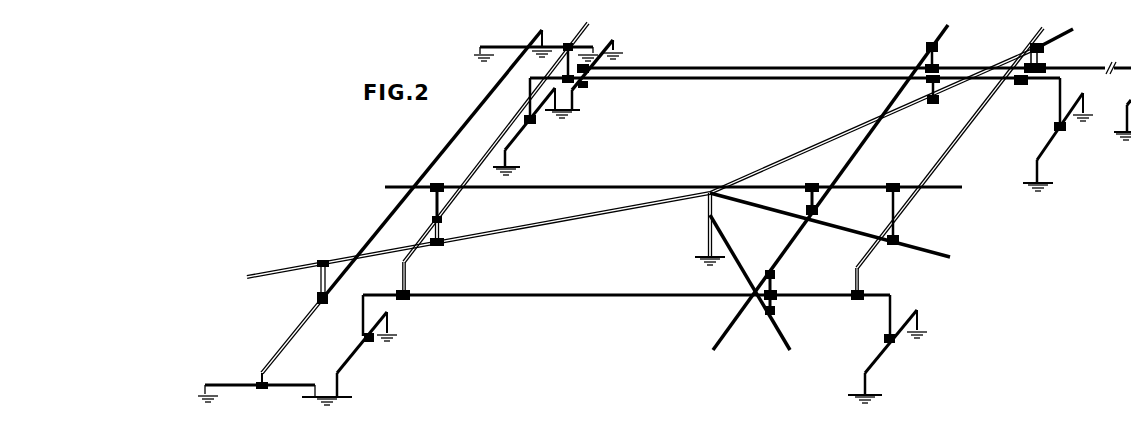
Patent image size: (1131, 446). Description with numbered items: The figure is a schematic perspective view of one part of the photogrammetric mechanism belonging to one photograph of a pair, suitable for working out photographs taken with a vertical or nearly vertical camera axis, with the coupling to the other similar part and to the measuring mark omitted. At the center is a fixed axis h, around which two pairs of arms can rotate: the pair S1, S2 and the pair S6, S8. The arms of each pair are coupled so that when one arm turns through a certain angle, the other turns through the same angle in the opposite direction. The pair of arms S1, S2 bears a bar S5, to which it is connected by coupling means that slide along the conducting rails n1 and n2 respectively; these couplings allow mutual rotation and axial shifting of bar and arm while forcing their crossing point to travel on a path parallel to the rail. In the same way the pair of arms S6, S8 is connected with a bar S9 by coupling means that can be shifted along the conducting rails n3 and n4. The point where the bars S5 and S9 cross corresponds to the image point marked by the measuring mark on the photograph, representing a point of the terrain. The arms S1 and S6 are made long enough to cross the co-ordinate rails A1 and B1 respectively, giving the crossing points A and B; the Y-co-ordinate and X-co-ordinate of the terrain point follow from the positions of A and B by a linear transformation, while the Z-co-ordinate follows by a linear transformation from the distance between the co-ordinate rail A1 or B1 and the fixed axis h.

The conducting rail n1 is at (496, 158).
The conducting rail n2 is at (997, 125).
The conducting rail n3 is at (727, 80).
The conducting rail n4 is at (626, 304).
The arm S1 is at (478, 235).
The arm S2 is at (830, 225).
The bar S5 is at (673, 178).
The arm S6 is at (892, 111).
The arm S8 is at (750, 282).
The bar S9 is at (830, 187).
The crossing point A is at (322, 269).
The co-ordinate rail A1 is at (401, 207).
The crossing point B is at (1040, 47).
The co-ordinate rail B1 is at (854, 62).
The fixed axis h is at (709, 229).